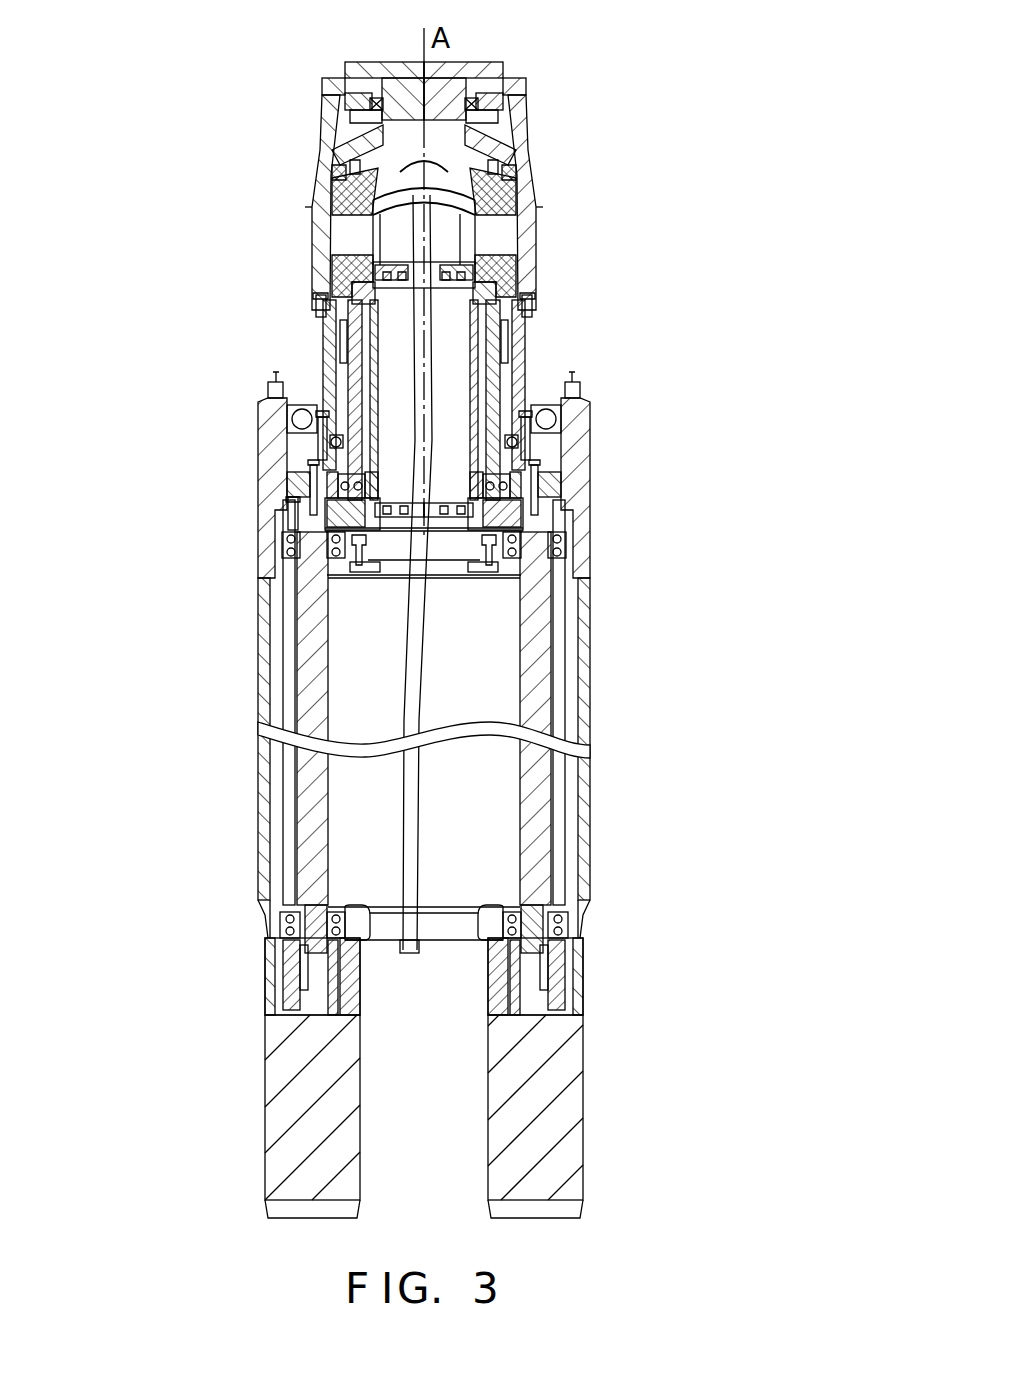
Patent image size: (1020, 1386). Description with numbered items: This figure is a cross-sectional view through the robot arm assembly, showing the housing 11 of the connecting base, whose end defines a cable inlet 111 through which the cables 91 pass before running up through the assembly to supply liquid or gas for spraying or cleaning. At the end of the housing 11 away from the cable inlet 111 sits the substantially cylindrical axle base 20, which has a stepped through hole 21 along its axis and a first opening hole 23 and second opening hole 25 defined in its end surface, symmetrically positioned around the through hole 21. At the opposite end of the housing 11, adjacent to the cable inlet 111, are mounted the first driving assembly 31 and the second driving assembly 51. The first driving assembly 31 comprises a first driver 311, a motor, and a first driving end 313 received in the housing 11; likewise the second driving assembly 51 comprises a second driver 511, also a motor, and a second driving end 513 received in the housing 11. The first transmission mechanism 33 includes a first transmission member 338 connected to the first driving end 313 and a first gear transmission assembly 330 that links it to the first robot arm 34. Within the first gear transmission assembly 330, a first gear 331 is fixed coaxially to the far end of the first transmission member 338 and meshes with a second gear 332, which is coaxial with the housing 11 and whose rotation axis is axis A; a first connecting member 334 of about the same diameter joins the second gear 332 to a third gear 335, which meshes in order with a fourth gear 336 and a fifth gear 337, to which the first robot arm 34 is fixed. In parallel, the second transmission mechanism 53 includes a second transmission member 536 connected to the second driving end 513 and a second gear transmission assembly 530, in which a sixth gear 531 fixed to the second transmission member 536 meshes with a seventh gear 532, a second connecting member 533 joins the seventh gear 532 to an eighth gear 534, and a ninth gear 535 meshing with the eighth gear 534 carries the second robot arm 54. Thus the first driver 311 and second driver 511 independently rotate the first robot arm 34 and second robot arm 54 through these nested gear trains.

The housing 11 is at (265, 680).
The cable inlet 111 is at (447, 922).
The axle base 20 is at (268, 490).
The through hole 21 is at (300, 432).
The first opening hole 23 is at (562, 540).
The second opening hole 25 is at (268, 525).
The first driving assembly 31 is at (605, 1078).
The first driver 311 is at (579, 1116).
The first driving end 313 is at (555, 972).
The first transmission mechanism 33 is at (535, 688).
The first gear transmission assembly 330 is at (541, 351).
The first gear 331 is at (610, 475).
The second gear 332 is at (560, 462).
The first connecting member 334 is at (480, 375).
The third gear 335 is at (520, 268).
The fourth gear 336 is at (520, 235).
The fifth gear 337 is at (510, 150).
The first transmission member 338 is at (540, 805).
The first robot arm 34 is at (398, 88).
The second driving assembly 51 is at (244, 1078).
The second driver 511 is at (305, 1100).
The second driving end 513 is at (296, 985).
The second transmission mechanism 53 is at (315, 625).
The second gear transmission assembly 530 is at (314, 347).
The sixth gear 531 is at (230, 494).
The seventh gear 532 is at (305, 455).
The second connecting member 533 is at (345, 368).
The eighth gear 534 is at (330, 268).
The ninth gear 535 is at (330, 210).
The second transmission member 536 is at (318, 812).
The second robot arm 54 is at (330, 115).
The cables 91 is at (415, 624).